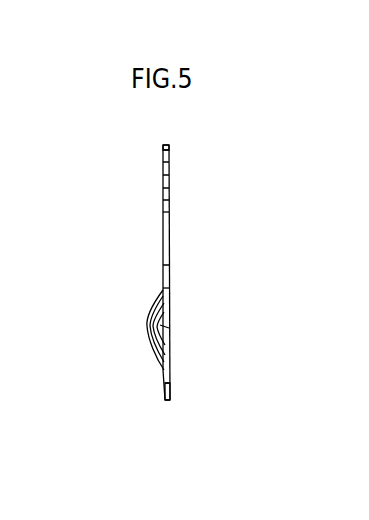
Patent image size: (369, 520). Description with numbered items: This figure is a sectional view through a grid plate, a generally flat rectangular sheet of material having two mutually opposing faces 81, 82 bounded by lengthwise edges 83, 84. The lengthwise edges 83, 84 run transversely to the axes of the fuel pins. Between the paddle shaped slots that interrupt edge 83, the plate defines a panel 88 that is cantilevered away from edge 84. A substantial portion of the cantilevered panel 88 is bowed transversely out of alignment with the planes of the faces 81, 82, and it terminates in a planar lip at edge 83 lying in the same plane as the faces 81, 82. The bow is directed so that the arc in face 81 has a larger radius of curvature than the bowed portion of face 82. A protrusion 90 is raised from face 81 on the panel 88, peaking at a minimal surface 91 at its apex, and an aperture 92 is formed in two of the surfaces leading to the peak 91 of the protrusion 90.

The face 81 is at (166, 203).
The face 82 is at (170, 205).
The lengthwise edge 83 is at (168, 402).
The lengthwise edge 84 is at (166, 145).
The panel 88 is at (170, 288).
The protrusion 90 is at (152, 350).
The minimal surface 91 is at (160, 325).
The aperture 92 is at (166, 330).